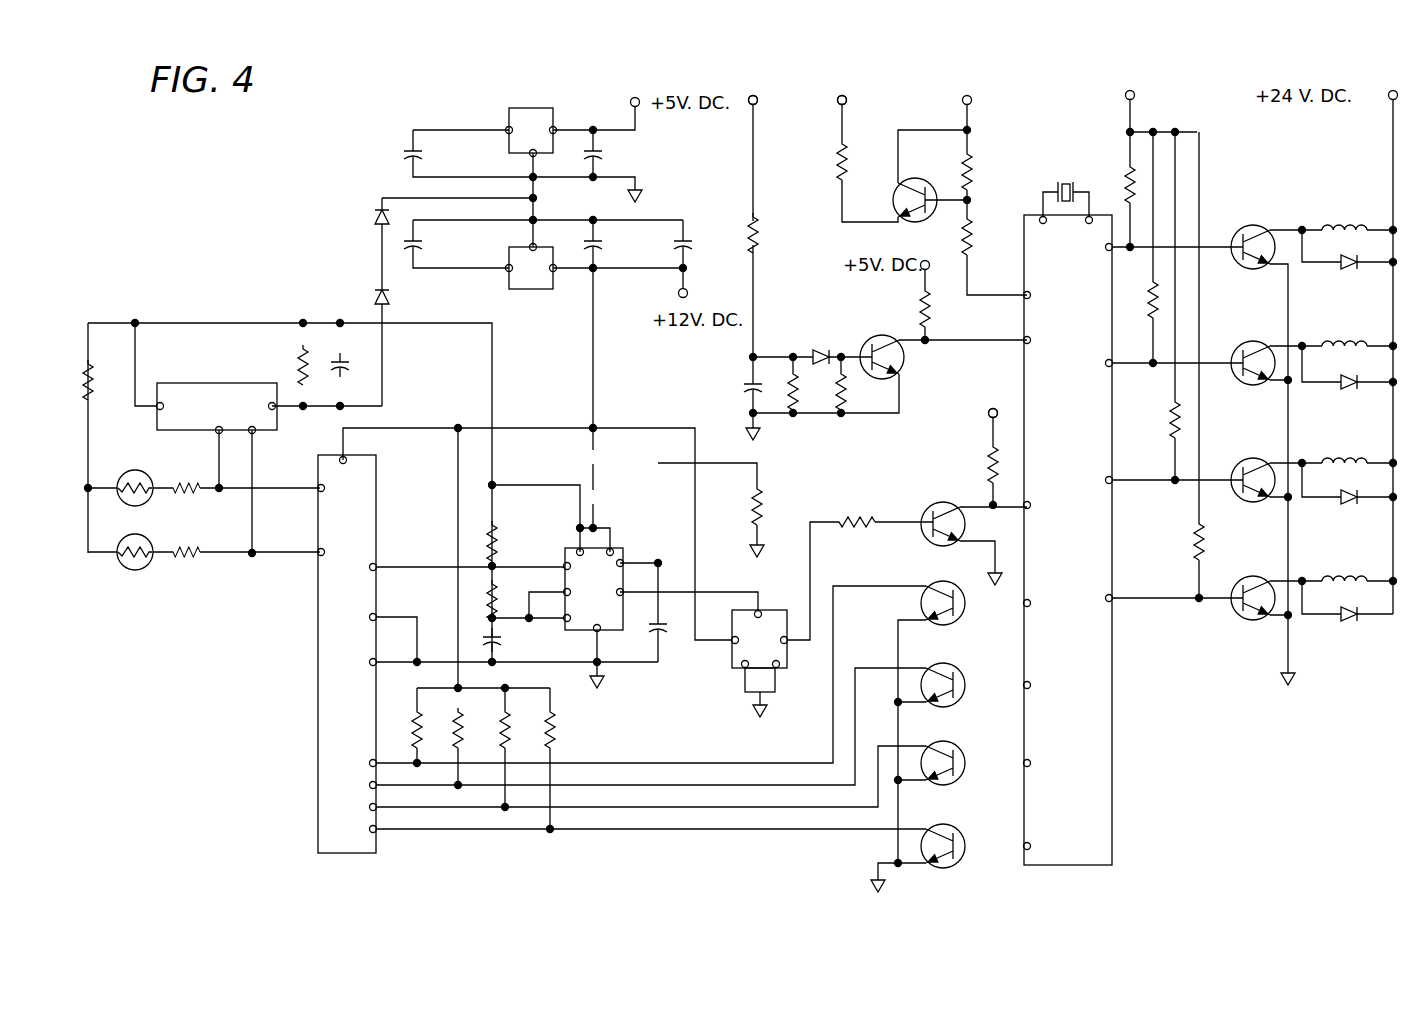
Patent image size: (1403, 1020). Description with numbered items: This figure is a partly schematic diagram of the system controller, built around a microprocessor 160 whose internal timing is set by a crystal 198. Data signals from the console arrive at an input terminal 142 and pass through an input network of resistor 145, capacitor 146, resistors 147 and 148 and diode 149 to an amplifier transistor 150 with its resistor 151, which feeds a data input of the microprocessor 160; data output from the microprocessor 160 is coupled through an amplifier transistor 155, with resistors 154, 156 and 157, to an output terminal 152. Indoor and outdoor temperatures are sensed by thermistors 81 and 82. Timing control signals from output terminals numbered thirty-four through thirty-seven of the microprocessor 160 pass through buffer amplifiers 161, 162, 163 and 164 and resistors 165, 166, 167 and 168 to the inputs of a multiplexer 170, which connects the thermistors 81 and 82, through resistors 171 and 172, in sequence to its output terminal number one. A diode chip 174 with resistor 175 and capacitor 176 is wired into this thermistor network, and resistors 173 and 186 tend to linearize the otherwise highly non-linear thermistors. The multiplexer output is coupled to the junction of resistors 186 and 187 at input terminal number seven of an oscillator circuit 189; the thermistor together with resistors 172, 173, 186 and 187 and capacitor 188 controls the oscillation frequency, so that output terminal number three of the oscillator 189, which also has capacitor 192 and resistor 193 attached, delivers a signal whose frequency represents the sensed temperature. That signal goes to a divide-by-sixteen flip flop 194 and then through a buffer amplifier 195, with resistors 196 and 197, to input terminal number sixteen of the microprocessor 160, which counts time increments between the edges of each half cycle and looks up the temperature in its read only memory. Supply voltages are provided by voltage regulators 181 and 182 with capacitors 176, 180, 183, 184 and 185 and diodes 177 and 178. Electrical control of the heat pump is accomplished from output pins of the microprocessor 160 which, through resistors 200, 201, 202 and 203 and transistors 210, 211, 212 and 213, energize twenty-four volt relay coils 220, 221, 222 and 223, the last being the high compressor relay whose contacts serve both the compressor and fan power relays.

The thermistor 81 is at (128, 517).
The thermistor 82 is at (138, 452).
The input terminal 142 is at (756, 100).
The resistor 145 is at (757, 220).
The capacitor 146 is at (748, 380).
The resistor 147 is at (795, 406).
The resistor 148 is at (845, 406).
The diode 149 is at (816, 351).
The amplifier transistor 150 is at (880, 339).
The resistor 151 is at (930, 306).
The output terminal 152 is at (843, 100).
The resistor 154 is at (840, 152).
The amplifier transistor 155 is at (896, 185).
The resistor 156 is at (976, 165).
The resistor 157 is at (975, 235).
The microprocessor 160 is at (1117, 737).
The buffer amplifier 161 is at (938, 582).
The buffer amplifier 162 is at (958, 670).
The buffer amplifier 163 is at (958, 750).
The buffer amplifier 164 is at (958, 831).
The resistor 165 is at (433, 718).
The resistor 166 is at (475, 718).
The resistor 167 is at (522, 718).
The resistor 168 is at (553, 713).
The multiplexer 170 is at (318, 668).
The resistor 171 is at (203, 520).
The resistor 172 is at (203, 455).
The resistor 173 is at (118, 348).
The diode chip 174 is at (190, 383).
The resistor 175 is at (299, 352).
The capacitor 176 is at (405, 156).
The diode 177 is at (372, 298).
The diode 178 is at (372, 218).
The capacitor 180 is at (417, 252).
The voltage regulator 181 is at (509, 112).
The voltage regulator 182 is at (545, 292).
The capacitor 183 is at (601, 153).
The capacitor 184 is at (601, 250).
The capacitor 185 is at (691, 250).
The resistor 186 is at (495, 538).
The resistor 187 is at (497, 603).
The capacitor 188 is at (501, 645).
The oscillator circuit 189 is at (601, 635).
The capacitor 192 is at (662, 640).
The resistor 193 is at (760, 495).
The divide-by-sixteen flip flop 194 is at (733, 668).
The buffer amplifier 195 is at (940, 503).
The resistor 196 is at (874, 509).
The resistor 197 is at (990, 455).
The crystal 198 is at (1076, 186).
The resistor 200 is at (1125, 170).
The resistor 201 is at (1150, 292).
The resistor 202 is at (1172, 410).
The resistor 203 is at (1196, 525).
The transistor 210 is at (1250, 226).
The transistor 211 is at (1260, 341).
The transistor 212 is at (1260, 458).
The transistor 213 is at (1260, 576).
The relay coil 220 is at (1380, 254).
The relay coil 221 is at (1380, 370).
The relay coil 222 is at (1380, 486).
The relay coil 223 is at (1380, 602).